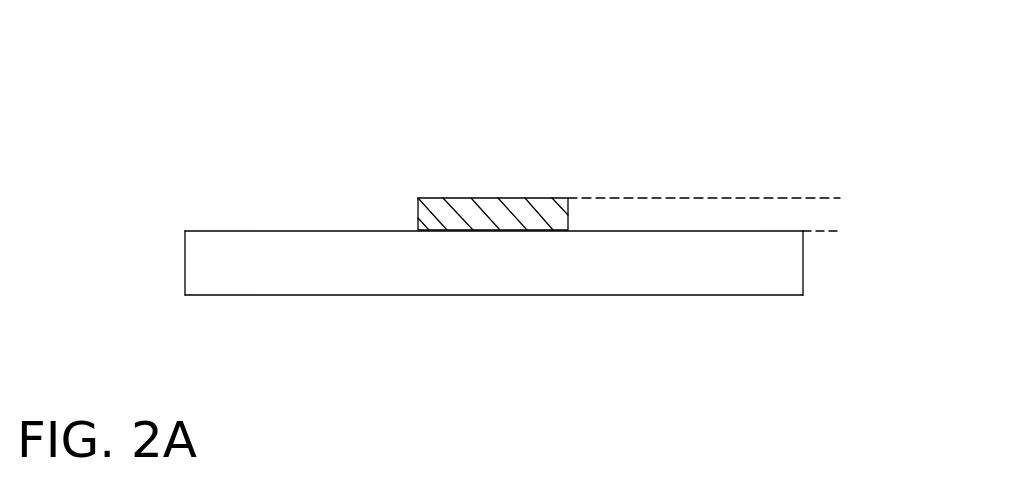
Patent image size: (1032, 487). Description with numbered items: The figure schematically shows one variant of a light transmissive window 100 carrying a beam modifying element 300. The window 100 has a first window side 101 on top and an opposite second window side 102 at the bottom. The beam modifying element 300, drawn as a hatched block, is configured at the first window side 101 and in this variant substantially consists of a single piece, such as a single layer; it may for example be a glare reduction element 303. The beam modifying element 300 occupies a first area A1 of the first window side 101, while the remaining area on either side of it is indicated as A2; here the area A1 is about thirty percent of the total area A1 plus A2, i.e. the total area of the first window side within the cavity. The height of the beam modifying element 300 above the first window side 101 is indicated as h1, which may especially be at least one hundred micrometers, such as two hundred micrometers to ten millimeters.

The light transmissive window 100 is at (531, 265).
The first window side 101 is at (208, 231).
The second window side 102 is at (755, 295).
The beam modifying element 300 is at (500, 145).
The glare reduction element 303 is at (527, 167).
The first area A1 is at (450, 170).
The remaining area A2 is at (742, 162).
The height of the beam modifying element h1 is at (836, 165).